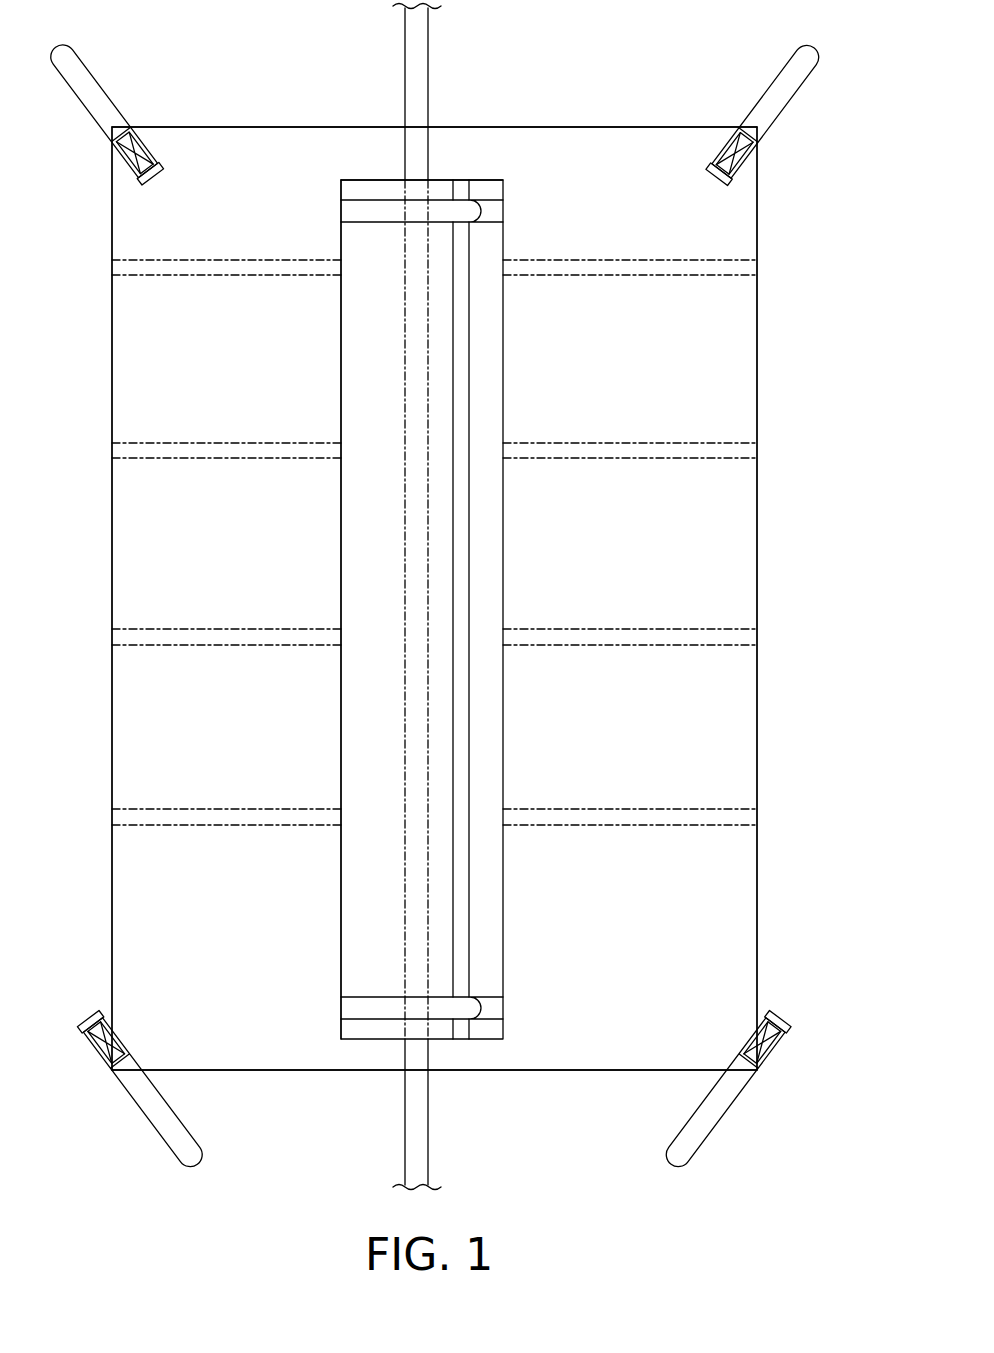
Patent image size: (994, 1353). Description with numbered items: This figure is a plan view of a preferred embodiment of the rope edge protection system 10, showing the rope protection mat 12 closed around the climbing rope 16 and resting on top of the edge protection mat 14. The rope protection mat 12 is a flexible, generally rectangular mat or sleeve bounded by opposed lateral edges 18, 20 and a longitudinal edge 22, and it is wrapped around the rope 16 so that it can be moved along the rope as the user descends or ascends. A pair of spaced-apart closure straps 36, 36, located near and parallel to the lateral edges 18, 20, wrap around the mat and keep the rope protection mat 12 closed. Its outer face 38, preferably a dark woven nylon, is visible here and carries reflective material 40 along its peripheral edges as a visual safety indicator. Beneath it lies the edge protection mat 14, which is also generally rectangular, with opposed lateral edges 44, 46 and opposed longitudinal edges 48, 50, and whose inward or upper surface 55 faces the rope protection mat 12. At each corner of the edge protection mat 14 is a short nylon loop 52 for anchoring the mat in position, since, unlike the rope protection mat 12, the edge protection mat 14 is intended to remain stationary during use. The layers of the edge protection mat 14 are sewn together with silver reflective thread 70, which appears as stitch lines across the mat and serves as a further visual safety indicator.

The rope edge protection system 10 is at (664, 50).
The rope protection mat 12 is at (433, 591).
The edge protection mat 14 is at (724, 364).
The climbing rope 16 is at (429, 34).
The lateral edge 18 is at (484, 180).
The lateral edge 20 is at (480, 1041).
The longitudinal edge 22 is at (470, 724).
The closure strap 36 is at (493, 212).
The outer face 38 is at (365, 687).
The reflective material 40 is at (460, 600).
The lateral edge 44 is at (531, 127).
The lateral edge 46 is at (577, 1071).
The longitudinal edge 48 is at (758, 579).
The longitudinal edge 50 is at (112, 585).
The loop 52 is at (96, 86).
The upper surface 55 is at (153, 889).
The reflective thread 70 is at (660, 277).